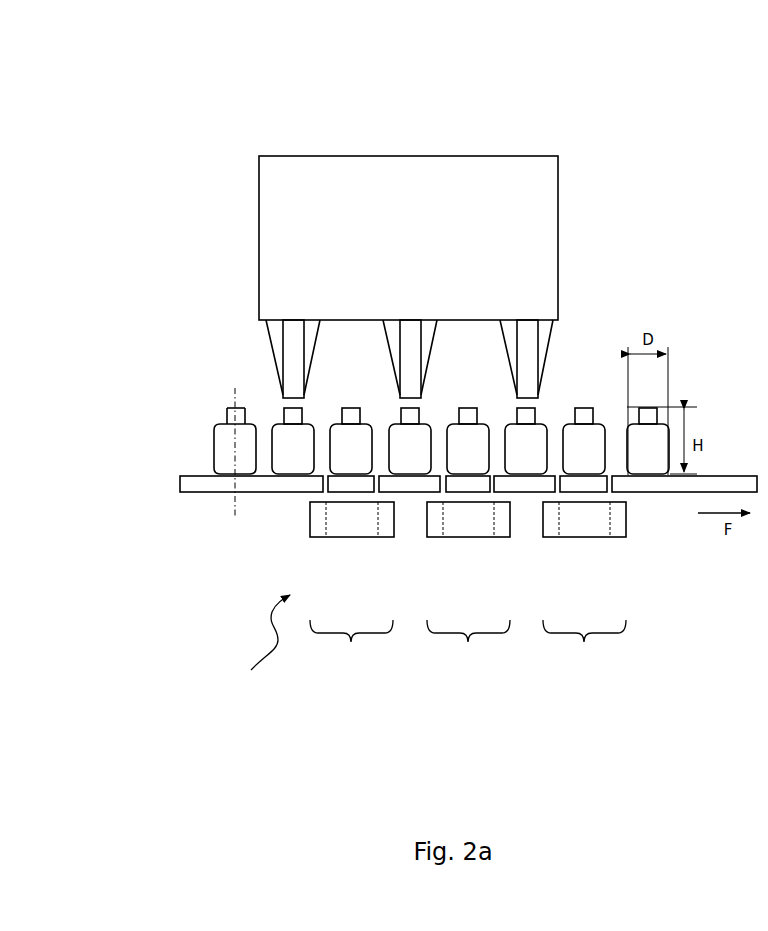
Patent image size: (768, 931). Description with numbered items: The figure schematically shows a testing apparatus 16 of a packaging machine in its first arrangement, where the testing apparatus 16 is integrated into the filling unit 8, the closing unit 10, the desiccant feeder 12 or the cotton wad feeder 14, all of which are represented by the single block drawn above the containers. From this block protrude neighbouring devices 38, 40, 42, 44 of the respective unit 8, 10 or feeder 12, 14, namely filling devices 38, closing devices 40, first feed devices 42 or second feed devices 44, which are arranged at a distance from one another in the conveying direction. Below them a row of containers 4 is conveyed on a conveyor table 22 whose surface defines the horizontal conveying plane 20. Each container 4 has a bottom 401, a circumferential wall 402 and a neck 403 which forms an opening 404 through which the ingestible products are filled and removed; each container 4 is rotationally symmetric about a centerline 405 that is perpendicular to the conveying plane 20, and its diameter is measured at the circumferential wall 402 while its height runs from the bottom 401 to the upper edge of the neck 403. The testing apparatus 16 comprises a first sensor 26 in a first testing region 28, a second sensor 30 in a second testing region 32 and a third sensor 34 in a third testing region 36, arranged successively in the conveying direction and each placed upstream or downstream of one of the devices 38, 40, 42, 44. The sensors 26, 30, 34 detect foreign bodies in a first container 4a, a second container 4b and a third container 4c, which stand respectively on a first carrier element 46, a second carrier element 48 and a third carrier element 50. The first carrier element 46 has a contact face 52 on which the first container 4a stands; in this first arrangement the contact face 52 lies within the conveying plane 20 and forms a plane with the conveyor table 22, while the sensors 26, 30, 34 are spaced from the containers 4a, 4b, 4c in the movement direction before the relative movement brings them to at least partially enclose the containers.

The filling unit 8 is at (436, 175).
The closing unit 10 is at (436, 175).
The desiccant feeder 12 is at (436, 175).
The cotton wad feeder 14 is at (453, 205).
The filling device 38 is at (416, 264).
The closing device 40 is at (416, 264).
The first feed device 42 is at (416, 264).
The second feed device 44 is at (410, 353).
The container 4 is at (169, 400).
The bottom 401 is at (232, 474).
The circumferential wall 402 is at (213, 440).
The neck 403 is at (226, 418).
The opening 404 is at (227, 406).
The centerline 405 is at (232, 508).
The first container 4a is at (357, 452).
The second container 4b is at (471, 452).
The third container 4c is at (587, 452).
The conveying plane 20 is at (469, 479).
The conveyor table 22 is at (673, 492).
The contact face 52 is at (340, 474).
The first carrier element 46 is at (342, 486).
The second carrier element 48 is at (459, 486).
The third carrier element 50 is at (575, 486).
The first sensor 26 is at (318, 522).
The second sensor 30 is at (425, 522).
The third sensor 34 is at (548, 522).
The first testing region 28 is at (351, 645).
The second testing region 32 is at (468, 647).
The third testing region 36 is at (584, 647).
The testing apparatus 16 is at (262, 643).